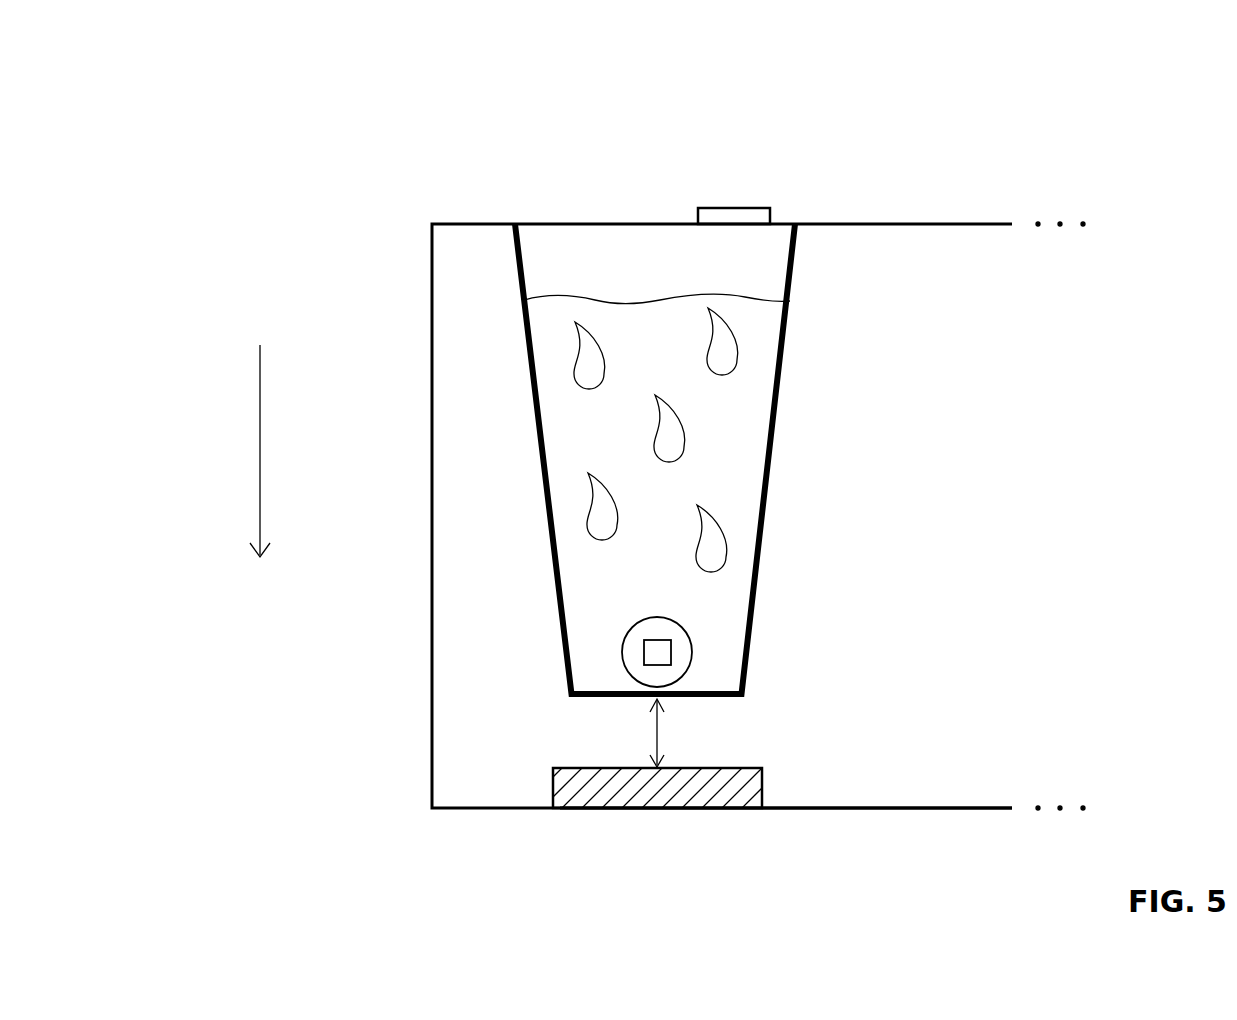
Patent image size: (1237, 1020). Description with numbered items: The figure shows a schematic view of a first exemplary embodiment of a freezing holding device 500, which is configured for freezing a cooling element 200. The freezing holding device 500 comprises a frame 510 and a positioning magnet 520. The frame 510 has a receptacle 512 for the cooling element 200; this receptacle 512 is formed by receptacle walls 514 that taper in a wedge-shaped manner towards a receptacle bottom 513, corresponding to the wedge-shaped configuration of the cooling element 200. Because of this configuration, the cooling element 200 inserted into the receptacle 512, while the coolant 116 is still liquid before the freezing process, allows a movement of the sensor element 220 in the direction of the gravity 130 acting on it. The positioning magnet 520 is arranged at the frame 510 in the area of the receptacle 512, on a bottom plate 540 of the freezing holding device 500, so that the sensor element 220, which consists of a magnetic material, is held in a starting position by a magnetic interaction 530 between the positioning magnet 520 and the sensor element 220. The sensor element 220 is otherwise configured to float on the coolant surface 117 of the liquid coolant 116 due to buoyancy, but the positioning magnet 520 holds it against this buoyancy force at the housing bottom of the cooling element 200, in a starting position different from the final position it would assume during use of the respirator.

The freezing holding device 500 is at (1031, 192).
The frame 510 is at (467, 224).
The receptacle 512 is at (809, 218).
The receptacle bottom 513 is at (694, 697).
The receptacle walls 514 is at (538, 441).
The cooling element 200 is at (615, 423).
The coolant surface 117 is at (622, 300).
The coolant 116 is at (745, 465).
The sensor element 220 is at (683, 657).
The magnetic interaction 530 is at (656, 726).
The positioning magnet 520 is at (682, 797).
The bottom plate 540 is at (888, 810).
The gravity 130 is at (260, 460).